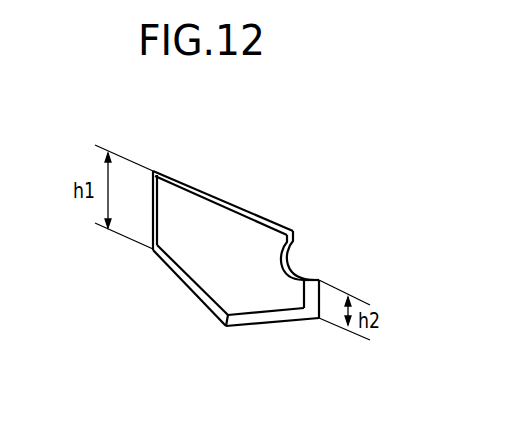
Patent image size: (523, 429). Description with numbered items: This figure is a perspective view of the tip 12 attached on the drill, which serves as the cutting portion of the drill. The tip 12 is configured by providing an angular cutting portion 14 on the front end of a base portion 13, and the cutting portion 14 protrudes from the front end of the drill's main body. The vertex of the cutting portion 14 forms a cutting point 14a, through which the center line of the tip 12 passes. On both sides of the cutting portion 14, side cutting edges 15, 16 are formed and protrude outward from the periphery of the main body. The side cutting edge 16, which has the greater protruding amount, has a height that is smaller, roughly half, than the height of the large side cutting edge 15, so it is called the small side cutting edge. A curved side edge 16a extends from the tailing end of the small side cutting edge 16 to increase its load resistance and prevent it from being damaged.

The tip 12 is at (242, 248).
The base portion 13 is at (228, 233).
The cutting portion 14 is at (247, 330).
The cutting point 14a is at (227, 330).
The side cutting edge 15 is at (155, 203).
The side cutting edge 16 is at (322, 298).
The curved side edge 16a is at (297, 253).